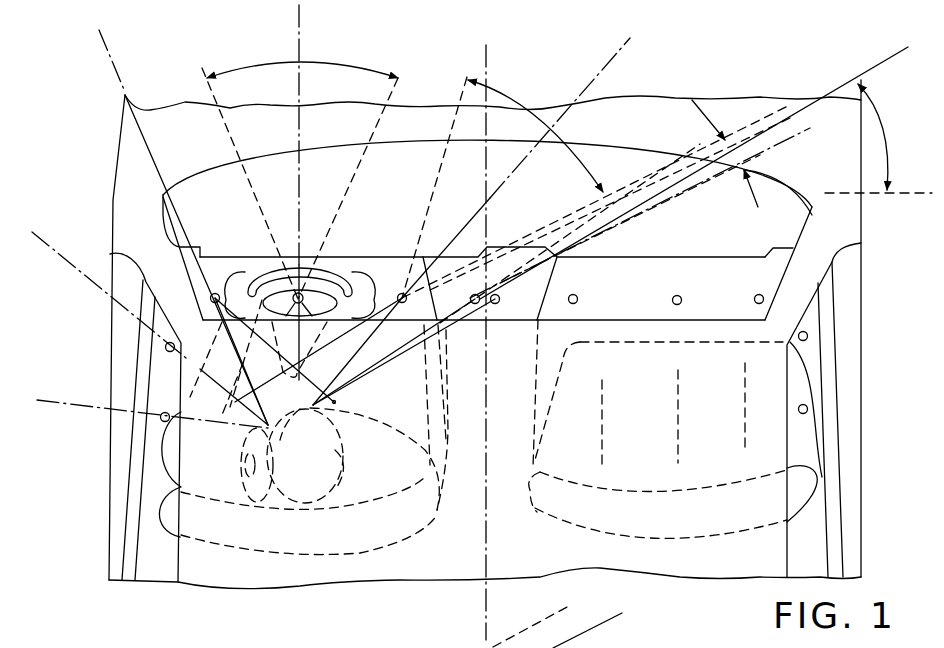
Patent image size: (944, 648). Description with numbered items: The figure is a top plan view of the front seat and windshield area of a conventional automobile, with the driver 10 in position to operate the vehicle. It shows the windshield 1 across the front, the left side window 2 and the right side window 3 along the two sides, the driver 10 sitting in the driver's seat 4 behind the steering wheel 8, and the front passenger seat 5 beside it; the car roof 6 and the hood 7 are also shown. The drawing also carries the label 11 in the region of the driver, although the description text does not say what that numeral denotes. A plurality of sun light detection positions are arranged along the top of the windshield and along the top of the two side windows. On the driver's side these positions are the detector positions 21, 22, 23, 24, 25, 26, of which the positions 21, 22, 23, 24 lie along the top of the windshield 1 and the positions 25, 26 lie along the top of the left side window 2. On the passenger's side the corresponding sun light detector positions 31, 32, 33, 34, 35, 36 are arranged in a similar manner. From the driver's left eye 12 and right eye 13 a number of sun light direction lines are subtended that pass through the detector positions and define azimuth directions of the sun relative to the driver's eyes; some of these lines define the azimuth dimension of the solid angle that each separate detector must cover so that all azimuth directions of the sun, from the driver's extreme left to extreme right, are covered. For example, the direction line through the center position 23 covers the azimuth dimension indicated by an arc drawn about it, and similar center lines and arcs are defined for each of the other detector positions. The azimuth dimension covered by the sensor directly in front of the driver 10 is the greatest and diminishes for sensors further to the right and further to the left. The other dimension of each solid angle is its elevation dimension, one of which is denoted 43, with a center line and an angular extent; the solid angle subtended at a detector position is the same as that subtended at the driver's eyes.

The windshield 1 is at (480, 335).
The left side window 2 is at (145, 390).
The right side window 3 is at (812, 355).
The driver's seat 4 is at (307, 552).
The front passenger seat 5 is at (684, 540).
The car roof 6 is at (527, 351).
The hood 7 is at (812, 146).
The steering wheel 8 is at (333, 273).
The driver 10 is at (372, 502).
The driver head 11 is at (330, 450).
The driver's left eye 12 is at (269, 410).
The driver's right eye 13 is at (338, 402).
The sun light detector position 21 is at (475, 304).
The sun light detector position 22 is at (407, 300).
The center position 23 is at (327, 326).
The sun light detector position 24 is at (210, 299).
The sun light detector position 25 is at (168, 352).
The sun light detector position 26 is at (169, 415).
The sun light detector position 31 is at (500, 302).
The sun light detector position 32 is at (578, 300).
The sun light detector position 33 is at (684, 290).
The sun light detector position 34 is at (760, 295).
The sun light detector position 35 is at (806, 333).
The sun light detector position 36 is at (799, 409).
The elevation angle solid-angle dimension 43 is at (553, 647).